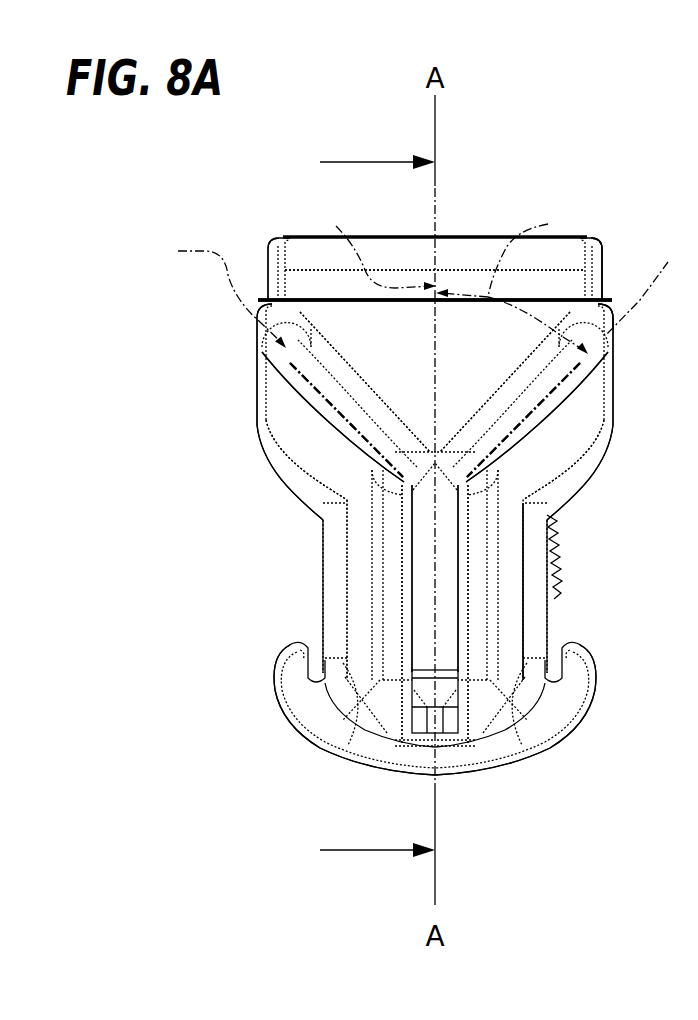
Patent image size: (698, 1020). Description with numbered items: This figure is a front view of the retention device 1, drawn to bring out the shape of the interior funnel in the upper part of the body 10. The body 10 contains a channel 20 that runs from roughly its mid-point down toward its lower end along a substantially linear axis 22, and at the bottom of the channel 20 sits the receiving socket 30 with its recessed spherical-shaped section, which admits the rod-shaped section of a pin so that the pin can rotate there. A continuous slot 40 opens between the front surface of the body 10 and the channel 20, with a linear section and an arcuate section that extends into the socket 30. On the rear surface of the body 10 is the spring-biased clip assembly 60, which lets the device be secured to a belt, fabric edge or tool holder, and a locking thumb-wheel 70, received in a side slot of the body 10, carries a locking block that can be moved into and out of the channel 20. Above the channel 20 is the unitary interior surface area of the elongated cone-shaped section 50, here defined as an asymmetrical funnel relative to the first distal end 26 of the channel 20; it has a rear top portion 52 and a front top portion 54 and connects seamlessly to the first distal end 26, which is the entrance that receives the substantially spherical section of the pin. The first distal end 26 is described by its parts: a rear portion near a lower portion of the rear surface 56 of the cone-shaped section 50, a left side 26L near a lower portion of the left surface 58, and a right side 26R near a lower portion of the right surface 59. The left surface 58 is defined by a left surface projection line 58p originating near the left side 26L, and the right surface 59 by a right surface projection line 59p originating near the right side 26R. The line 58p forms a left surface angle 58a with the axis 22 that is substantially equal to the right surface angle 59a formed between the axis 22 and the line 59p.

The retention device 1 is at (236, 339).
The body 10 is at (263, 430).
The channel 20 is at (430, 625).
The substantially linear axis 22 is at (438, 240).
The first distal end 26 is at (470, 477).
The left side 26L is at (405, 478).
The right side 26R is at (433, 468).
The receiving socket 30 is at (443, 687).
The continuous slot 40 is at (412, 553).
The elongated cone-shaped section 50 is at (362, 321).
The rear top portion 52 is at (540, 302).
The front top portion 54 is at (357, 417).
The rear surface 56 is at (435, 382).
The left surface 58 is at (310, 396).
The left surface angle 58a is at (370, 250).
The left surface projection line 58p is at (213, 294).
The right surface 59 is at (565, 384).
The right surface angle 59a is at (512, 282).
The right surface projection line 59p is at (651, 292).
The spring-biased clip assembly 60 is at (622, 246).
The locking thumb-wheel 70 is at (558, 568).